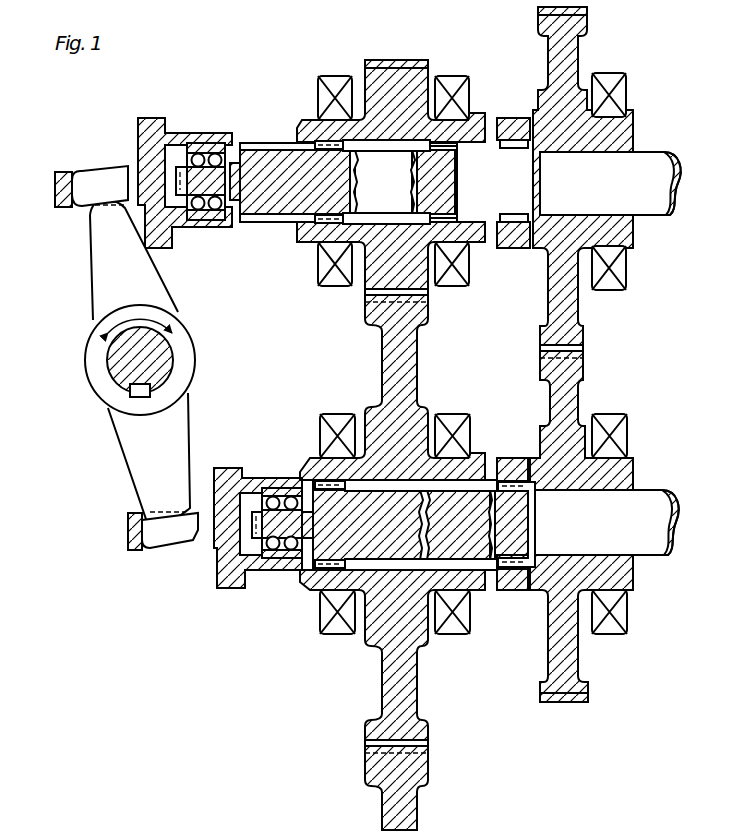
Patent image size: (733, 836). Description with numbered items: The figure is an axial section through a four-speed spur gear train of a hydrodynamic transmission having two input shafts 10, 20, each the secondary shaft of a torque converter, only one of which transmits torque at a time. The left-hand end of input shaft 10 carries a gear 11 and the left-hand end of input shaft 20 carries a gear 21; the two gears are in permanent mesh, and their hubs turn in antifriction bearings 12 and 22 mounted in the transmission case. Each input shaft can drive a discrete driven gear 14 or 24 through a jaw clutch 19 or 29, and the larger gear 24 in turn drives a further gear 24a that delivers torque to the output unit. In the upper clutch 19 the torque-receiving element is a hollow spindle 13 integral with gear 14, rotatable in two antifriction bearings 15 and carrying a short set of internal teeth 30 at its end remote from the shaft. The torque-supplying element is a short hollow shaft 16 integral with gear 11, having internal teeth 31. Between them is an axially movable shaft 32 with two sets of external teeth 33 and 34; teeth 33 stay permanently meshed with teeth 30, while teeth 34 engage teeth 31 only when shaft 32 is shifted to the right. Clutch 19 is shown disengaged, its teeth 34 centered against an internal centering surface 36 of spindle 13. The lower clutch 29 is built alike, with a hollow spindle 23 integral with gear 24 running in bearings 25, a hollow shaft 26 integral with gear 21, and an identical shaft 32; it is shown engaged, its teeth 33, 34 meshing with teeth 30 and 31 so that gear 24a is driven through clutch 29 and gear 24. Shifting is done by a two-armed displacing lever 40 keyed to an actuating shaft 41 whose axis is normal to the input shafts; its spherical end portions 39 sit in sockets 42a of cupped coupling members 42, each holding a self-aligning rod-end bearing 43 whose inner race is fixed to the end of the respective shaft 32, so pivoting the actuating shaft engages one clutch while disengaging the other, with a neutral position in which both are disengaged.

The input shaft 10 is at (648, 165).
The gear 11 is at (567, 50).
The antifriction bearing 12 is at (615, 95).
The hollow spindle 13 is at (303, 123).
The driven gear 14 is at (400, 93).
The antifriction bearings 15 is at (442, 96).
The hollow shaft 16 is at (508, 128).
The jaw clutch 19 is at (271, 124).
The input shaft 20 is at (650, 508).
The gear 21 is at (568, 656).
The antifriction bearing 22 is at (620, 432).
The hollow spindle 23 is at (316, 588).
The driven gear 24 is at (390, 672).
The further gear 24a is at (412, 798).
The antifriction bearings 25 is at (445, 437).
The hollow shaft 26 is at (503, 578).
The jaw clutch 29 is at (262, 598).
The internal gear teeth 30 is at (328, 226).
The internal gear teeth 31 is at (515, 214).
The shaft 32 is at (394, 194).
The external gear teeth 33 is at (270, 218).
The external gear teeth 34 is at (446, 220).
The internal centering surface 36 is at (471, 148).
The spherical end portions 39 is at (90, 176).
The displacing lever 40 is at (105, 270).
The actuating shaft 41 is at (158, 350).
The coupling members 42 is at (146, 118).
The sockets 42a is at (62, 190).
The antifriction bearing 43 is at (193, 143).